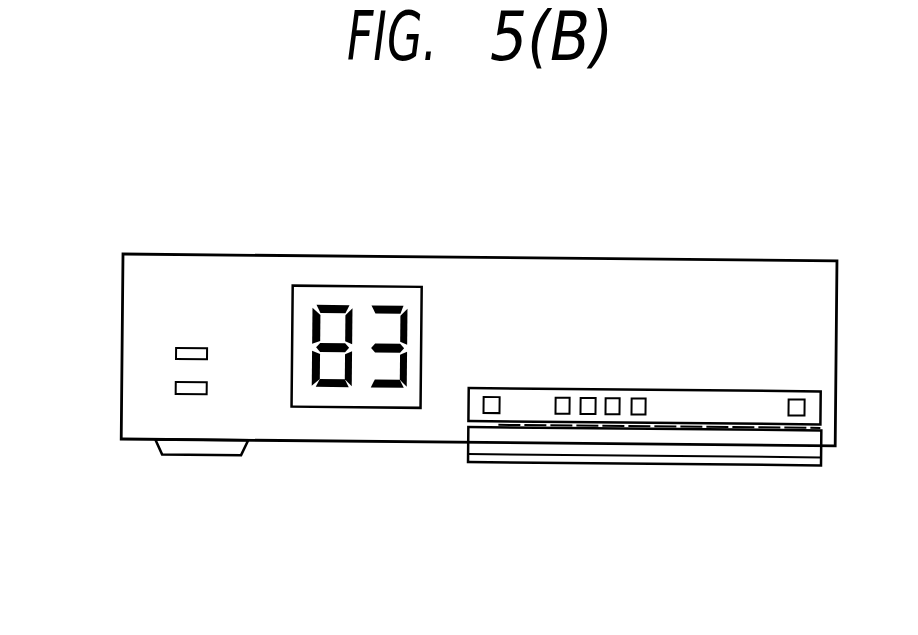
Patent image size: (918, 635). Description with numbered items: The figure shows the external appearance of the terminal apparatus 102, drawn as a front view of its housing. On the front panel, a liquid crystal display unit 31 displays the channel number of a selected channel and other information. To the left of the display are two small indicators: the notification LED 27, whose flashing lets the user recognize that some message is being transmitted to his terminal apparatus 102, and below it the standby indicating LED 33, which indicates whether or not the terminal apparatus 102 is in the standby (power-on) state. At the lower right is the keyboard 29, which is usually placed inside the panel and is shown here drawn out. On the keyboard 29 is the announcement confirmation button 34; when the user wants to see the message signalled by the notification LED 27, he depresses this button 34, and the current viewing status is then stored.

The terminal apparatus 102 is at (561, 238).
The liquid crystal display unit 31 is at (335, 284).
The notification LED 27 is at (177, 354).
The standby indicating LED 33 is at (191, 394).
The announcement confirmation button 34 is at (493, 410).
The keyboard 29 is at (598, 470).